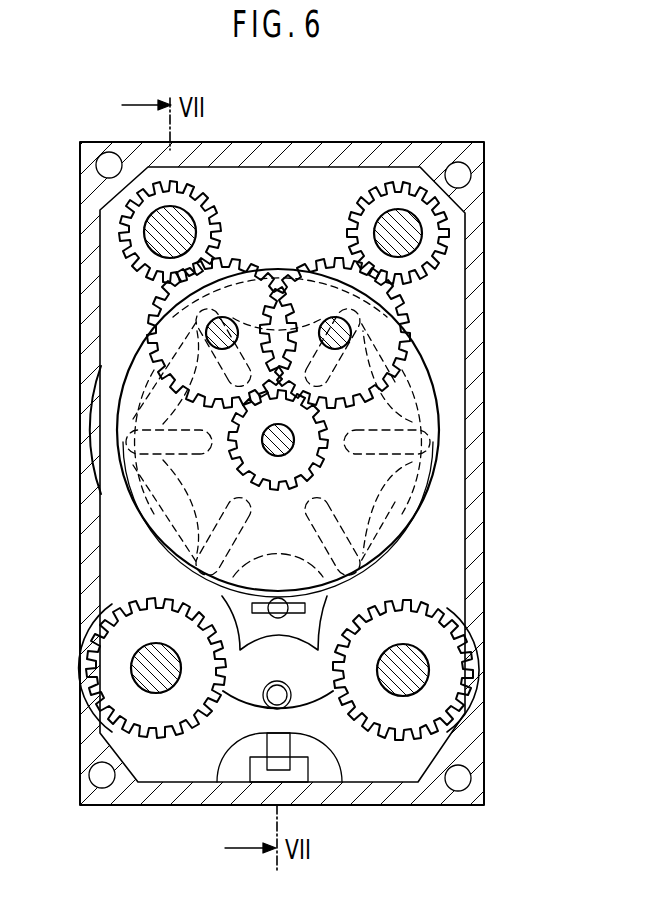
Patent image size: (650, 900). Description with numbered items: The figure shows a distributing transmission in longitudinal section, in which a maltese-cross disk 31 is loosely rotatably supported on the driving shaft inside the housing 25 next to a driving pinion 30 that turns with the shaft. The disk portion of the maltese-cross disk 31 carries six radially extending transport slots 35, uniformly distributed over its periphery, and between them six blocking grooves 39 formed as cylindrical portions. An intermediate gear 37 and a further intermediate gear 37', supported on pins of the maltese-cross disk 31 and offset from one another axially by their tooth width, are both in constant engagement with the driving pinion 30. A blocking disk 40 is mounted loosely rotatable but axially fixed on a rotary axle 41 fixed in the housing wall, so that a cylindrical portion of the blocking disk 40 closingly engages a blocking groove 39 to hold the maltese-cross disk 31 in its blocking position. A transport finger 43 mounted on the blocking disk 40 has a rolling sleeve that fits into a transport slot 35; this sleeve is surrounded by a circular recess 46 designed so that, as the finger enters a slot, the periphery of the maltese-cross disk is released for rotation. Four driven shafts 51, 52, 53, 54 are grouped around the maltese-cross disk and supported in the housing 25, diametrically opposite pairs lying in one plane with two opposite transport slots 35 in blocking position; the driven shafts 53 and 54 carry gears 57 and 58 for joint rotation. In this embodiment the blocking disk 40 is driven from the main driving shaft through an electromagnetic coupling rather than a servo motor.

The housing 25 is at (367, 158).
The driving pinion 30 is at (243, 467).
The maltese-cross disk 31 is at (152, 413).
The transport slot 35 is at (368, 455).
The intermediate gear 37 is at (360, 333).
The further intermediate gear 37' is at (169, 333).
The blocking groove 39 is at (418, 468).
The blocking disk 40 is at (323, 615).
The rotary axle 41 is at (262, 607).
The transport finger 43 is at (290, 708).
The circular recess 46 is at (297, 643).
The driven shaft 51 is at (410, 243).
The driven shaft 52 is at (165, 240).
The driven shaft 53 is at (150, 660).
The driven shaft 54 is at (412, 672).
The gear 57 is at (156, 715).
The gear 58 is at (406, 718).